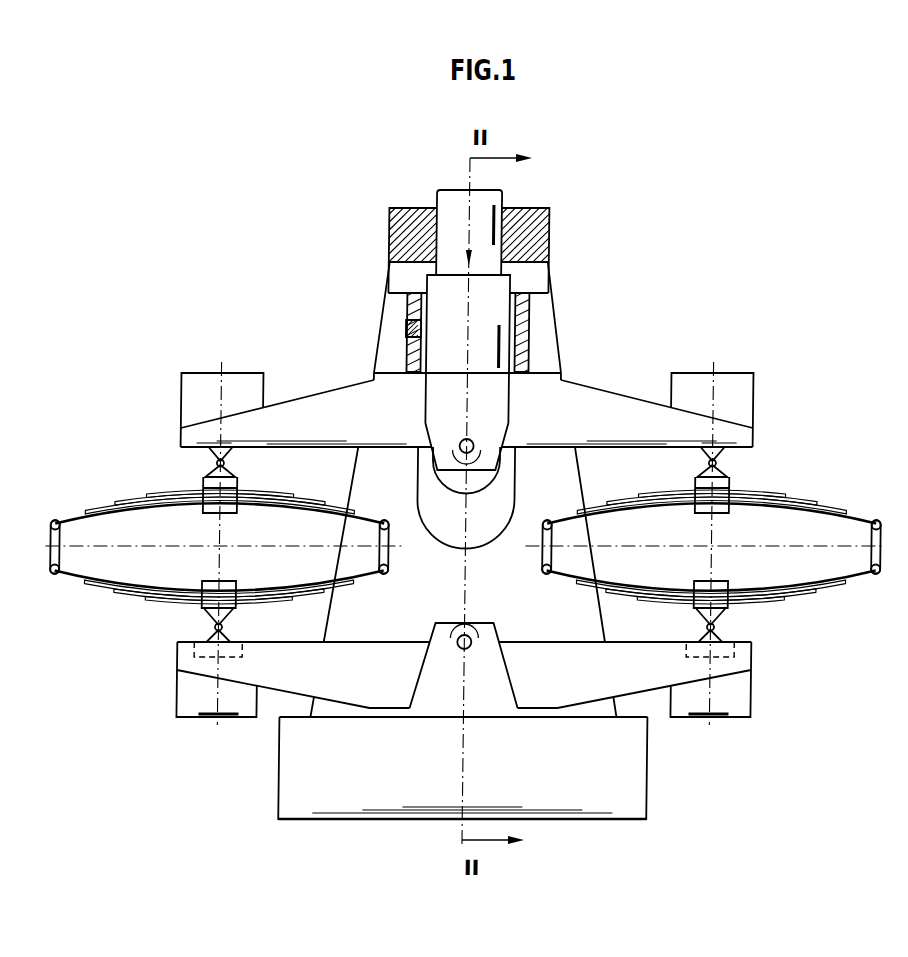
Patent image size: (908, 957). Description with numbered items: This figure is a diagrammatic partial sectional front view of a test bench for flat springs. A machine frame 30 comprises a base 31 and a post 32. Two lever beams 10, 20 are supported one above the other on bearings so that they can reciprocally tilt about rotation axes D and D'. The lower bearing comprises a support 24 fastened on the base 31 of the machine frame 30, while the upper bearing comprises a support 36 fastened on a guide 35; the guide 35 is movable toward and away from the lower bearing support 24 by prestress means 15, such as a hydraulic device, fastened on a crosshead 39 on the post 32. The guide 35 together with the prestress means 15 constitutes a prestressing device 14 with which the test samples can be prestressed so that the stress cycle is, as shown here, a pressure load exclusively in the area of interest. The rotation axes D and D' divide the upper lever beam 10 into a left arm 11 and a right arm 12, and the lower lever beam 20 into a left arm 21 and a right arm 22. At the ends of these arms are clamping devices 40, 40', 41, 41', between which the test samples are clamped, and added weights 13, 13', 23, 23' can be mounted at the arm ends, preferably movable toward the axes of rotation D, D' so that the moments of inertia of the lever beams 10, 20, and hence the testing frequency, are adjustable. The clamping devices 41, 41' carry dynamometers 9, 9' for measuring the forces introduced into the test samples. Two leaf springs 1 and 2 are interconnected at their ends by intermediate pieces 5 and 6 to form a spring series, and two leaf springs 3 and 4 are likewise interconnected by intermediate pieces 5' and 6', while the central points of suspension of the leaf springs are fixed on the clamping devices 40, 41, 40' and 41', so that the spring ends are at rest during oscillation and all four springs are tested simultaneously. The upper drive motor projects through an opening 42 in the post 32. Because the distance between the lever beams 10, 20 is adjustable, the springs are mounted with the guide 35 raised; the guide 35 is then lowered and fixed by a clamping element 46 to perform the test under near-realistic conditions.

The leaf spring 1 is at (220, 479).
The leaf spring 2 is at (219, 603).
The leaf spring 3 is at (712, 478).
The leaf spring 4 is at (711, 602).
The intermediate piece 5 is at (406, 557).
The intermediate piece 5' is at (870, 565).
The intermediate piece 6 is at (65, 575).
The intermediate piece 6' is at (582, 546).
The dynamometer 9 is at (237, 658).
The dynamometer 9' is at (678, 660).
The lever beam 10 is at (436, 321).
The left arm 11 is at (307, 393).
The right arm 12 is at (628, 393).
The added weight 13 is at (222, 388).
The added weight 13' is at (712, 385).
The prestressing device 14 is at (520, 311).
The prestress means 15 is at (490, 224).
The lever beam 20 is at (188, 700).
The left arm 21 is at (303, 698).
The right arm 22 is at (625, 695).
The added weight 23 is at (214, 706).
The added weight 23' is at (711, 707).
The support 24 is at (464, 694).
The machine frame 30 is at (591, 807).
The base 31 is at (463, 741).
The post 32 is at (466, 582).
The guide 35 is at (467, 349).
The support 36 is at (467, 431).
The crosshead 39 is at (489, 235).
The clamping device 40 is at (210, 421).
The clamping device 40' is at (704, 418).
The clamping device 41 is at (187, 618).
The clamping device 41' is at (739, 637).
The opening 42 is at (440, 497).
The clamping element 46 is at (388, 309).
The rotation axis D is at (460, 428).
The rotation axis D' is at (475, 661).